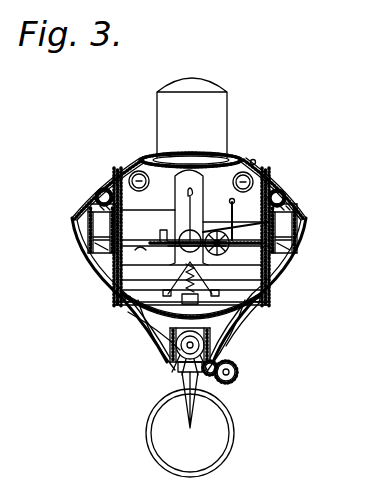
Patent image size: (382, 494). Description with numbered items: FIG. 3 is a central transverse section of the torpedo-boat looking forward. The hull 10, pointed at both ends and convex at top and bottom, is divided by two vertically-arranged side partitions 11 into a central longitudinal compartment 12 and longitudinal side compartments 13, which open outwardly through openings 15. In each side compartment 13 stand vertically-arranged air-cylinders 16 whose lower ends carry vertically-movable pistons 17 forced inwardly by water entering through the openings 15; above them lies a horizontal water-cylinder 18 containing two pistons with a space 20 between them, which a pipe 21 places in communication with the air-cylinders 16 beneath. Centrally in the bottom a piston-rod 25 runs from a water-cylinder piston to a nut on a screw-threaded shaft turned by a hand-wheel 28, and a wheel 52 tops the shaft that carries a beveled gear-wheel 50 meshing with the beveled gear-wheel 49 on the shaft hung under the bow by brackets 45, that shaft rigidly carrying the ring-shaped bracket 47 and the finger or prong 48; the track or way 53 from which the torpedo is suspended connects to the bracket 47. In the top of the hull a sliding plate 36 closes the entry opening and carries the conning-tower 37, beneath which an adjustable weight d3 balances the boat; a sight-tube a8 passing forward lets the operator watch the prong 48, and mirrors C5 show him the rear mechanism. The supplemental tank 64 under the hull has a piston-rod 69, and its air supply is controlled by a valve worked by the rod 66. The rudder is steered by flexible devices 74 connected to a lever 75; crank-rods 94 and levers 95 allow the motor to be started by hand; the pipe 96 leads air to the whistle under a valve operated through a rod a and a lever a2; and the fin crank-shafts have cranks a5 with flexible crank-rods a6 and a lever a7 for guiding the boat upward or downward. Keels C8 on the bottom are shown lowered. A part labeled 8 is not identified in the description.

The cross bar 8 is at (191, 238).
The hull 10 is at (256, 162).
The side partitions 11 is at (112, 180).
The central longitudinal compartment 12 is at (235, 226).
The longitudinal side compartments 13 is at (80, 226).
The openings 15 is at (116, 284).
The air-cylinders 16 is at (95, 240).
The piston 17 is at (103, 260).
The horizontal water-cylinder 18 is at (94, 186).
The space 20 is at (72, 196).
The pipe 21 is at (88, 208).
The piston-rod 25 is at (191, 283).
The hand-wheel 28 is at (268, 298).
The sliding plate 36 is at (147, 152).
The conning-tower 37 is at (228, 128).
The brackets 45 is at (152, 340).
The ring-shaped bracket 47 is at (232, 443).
The finger or prong 48 is at (190, 412).
The beveled gear-wheel 49 is at (222, 382).
The beveled gear-wheel 50 is at (238, 374).
The wheel 52 is at (284, 256).
The track or way 53 is at (180, 372).
The supplemental tank 64 is at (178, 352).
The rod 66 is at (266, 312).
The piston-rod 69 is at (232, 362).
The flexible devices 74 is at (122, 292).
The lever 75 is at (198, 196).
The crank-rods 94 is at (146, 322).
The levers 95 is at (283, 258).
The pipe 96 is at (128, 312).
The rod a is at (142, 300).
The lever a2 is at (158, 200).
The cranks a5 is at (210, 218).
The flexible crank-rods a6 is at (113, 197).
The lever a7 is at (180, 213).
The sight-tube a8 is at (189, 217).
The mirrors C5 is at (150, 181).
The keels C8 is at (195, 341).
The adjustable weight d3 is at (190, 228).